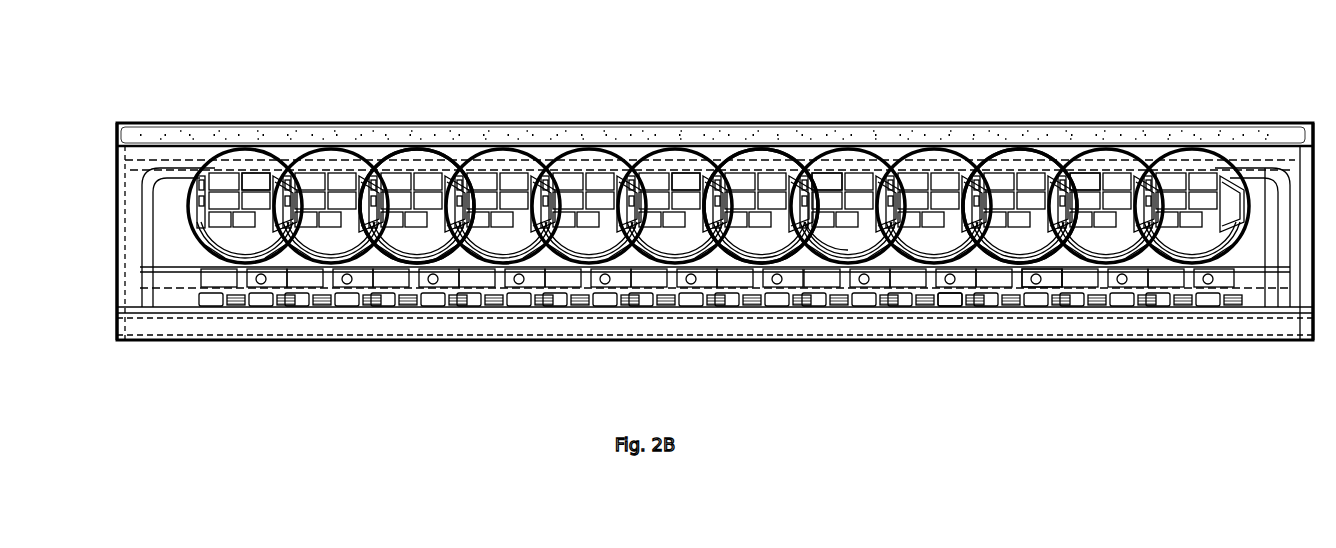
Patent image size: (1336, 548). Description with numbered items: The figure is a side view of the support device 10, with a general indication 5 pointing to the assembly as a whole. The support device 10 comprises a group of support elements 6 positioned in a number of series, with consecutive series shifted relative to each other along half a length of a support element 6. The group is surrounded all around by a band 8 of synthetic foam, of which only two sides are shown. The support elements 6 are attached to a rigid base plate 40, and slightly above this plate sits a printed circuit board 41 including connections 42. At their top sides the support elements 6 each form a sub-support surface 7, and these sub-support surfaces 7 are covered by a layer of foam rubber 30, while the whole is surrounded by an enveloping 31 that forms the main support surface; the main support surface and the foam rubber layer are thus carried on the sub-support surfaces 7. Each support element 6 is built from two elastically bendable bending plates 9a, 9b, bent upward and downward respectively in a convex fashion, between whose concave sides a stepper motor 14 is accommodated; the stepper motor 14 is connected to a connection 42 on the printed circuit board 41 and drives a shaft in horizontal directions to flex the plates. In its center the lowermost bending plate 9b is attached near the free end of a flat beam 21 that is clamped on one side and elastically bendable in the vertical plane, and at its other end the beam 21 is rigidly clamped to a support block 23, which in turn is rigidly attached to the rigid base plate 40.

The light fixture 5 is at (191, 80).
The support device 10 is at (498, 80).
The stepper motor 14 is at (262, 195).
The layer of foam rubber 30 is at (366, 133).
The sub-support surface 7 is at (417, 146).
The enveloping 31 is at (568, 123).
The bending plate 9a is at (700, 160).
The bending plate 9b is at (820, 250).
The support element 6 is at (850, 160).
The band 8 is at (125, 192).
The rigid base plate 40 is at (437, 322).
The printed circuit board 41 is at (533, 310).
The connections 42 is at (938, 312).
The support block 23 is at (1050, 280).
The beam 21 is at (1152, 268).